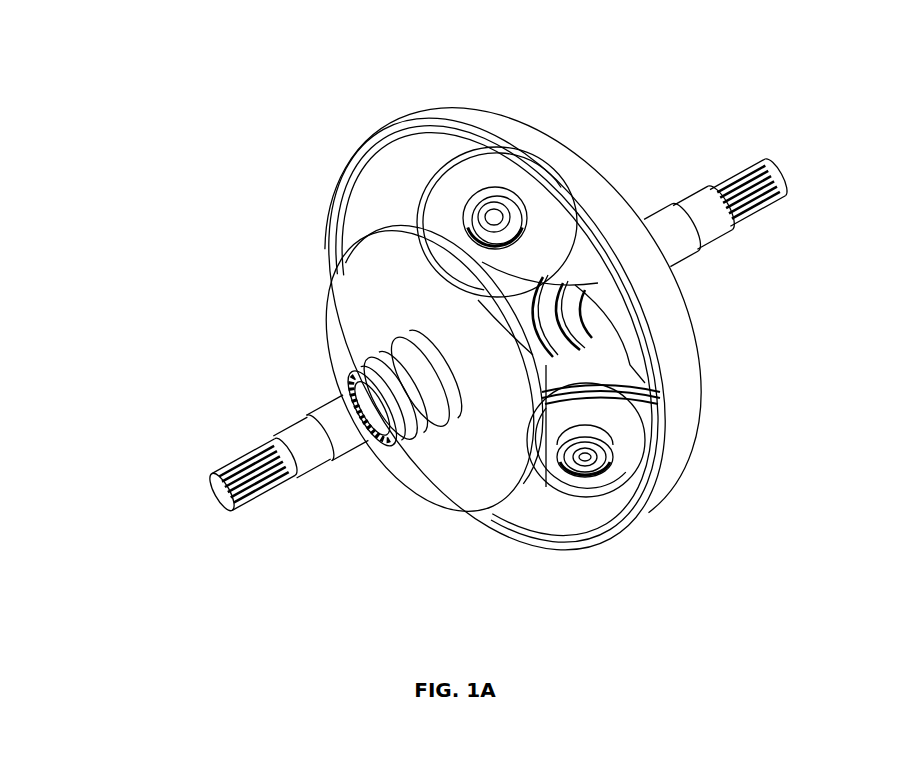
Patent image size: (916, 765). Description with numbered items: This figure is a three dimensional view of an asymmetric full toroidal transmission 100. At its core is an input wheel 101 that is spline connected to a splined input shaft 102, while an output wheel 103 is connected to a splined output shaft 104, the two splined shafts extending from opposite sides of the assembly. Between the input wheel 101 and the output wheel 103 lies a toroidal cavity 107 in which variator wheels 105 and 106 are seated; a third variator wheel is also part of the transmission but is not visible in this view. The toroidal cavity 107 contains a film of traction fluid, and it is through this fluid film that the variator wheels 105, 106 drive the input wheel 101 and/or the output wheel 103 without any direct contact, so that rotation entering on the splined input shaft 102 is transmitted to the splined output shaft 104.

The asymmetric full toroidal transmission 100 is at (278, 212).
The input wheel 101 is at (500, 354).
The splined input shaft 102 is at (218, 489).
The output wheel 103 is at (578, 157).
The splined output shaft 104 is at (776, 190).
The variator wheel 105 is at (505, 185).
The variator wheel 106 is at (551, 466).
The toroidal cavity 107 is at (398, 163).